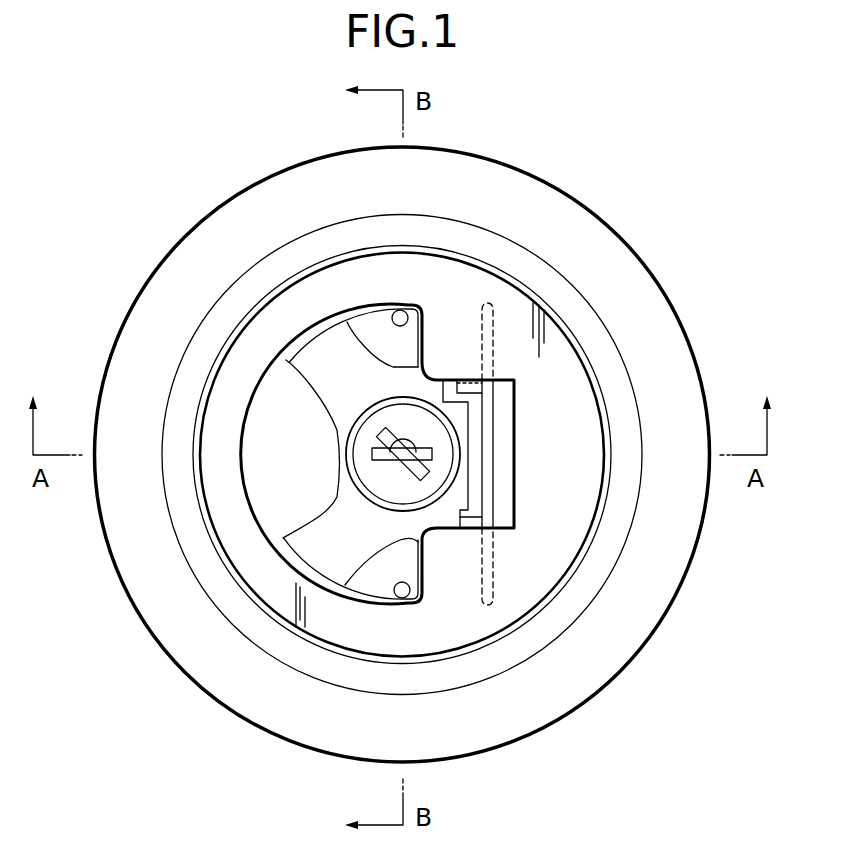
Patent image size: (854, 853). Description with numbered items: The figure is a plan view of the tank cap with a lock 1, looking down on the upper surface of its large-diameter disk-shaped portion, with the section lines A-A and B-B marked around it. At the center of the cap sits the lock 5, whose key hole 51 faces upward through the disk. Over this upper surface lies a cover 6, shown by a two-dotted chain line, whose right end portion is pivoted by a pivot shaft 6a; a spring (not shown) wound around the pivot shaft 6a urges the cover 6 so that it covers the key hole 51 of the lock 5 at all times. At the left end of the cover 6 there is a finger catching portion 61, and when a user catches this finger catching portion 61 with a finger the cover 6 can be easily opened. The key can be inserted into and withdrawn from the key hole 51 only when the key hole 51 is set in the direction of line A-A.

The tank cap with a lock 1 is at (648, 191).
The lock 5 is at (421, 490).
The key hole 51 is at (385, 455).
The cover 6 is at (315, 323).
The pivot shaft 6a is at (482, 310).
The finger catching portion 61 is at (337, 452).